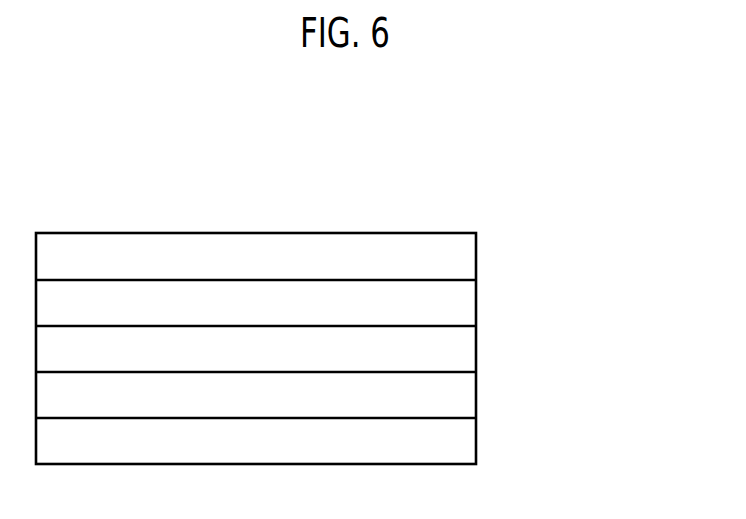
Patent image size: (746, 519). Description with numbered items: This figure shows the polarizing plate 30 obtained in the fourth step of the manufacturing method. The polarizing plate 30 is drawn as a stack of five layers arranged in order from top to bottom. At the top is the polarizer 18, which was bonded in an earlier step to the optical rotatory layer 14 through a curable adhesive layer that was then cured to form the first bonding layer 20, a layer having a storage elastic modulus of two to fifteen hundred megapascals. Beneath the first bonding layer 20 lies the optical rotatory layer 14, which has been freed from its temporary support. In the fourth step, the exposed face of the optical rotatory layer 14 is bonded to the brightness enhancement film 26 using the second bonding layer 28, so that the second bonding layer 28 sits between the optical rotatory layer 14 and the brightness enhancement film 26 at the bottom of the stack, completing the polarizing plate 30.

The polarizing plate 30 is at (440, 202).
The polarizer 18 is at (477, 254).
The first bonding layer 20 is at (477, 300).
The optical rotatory layer 14 is at (477, 346).
The second bonding layer 28 is at (477, 392).
The brightness enhancement film 26 is at (477, 438).